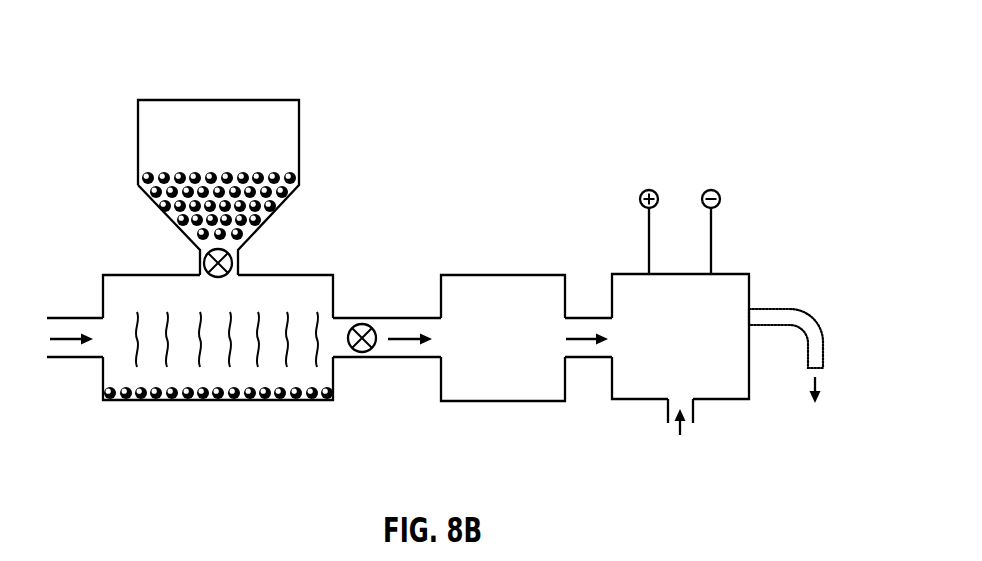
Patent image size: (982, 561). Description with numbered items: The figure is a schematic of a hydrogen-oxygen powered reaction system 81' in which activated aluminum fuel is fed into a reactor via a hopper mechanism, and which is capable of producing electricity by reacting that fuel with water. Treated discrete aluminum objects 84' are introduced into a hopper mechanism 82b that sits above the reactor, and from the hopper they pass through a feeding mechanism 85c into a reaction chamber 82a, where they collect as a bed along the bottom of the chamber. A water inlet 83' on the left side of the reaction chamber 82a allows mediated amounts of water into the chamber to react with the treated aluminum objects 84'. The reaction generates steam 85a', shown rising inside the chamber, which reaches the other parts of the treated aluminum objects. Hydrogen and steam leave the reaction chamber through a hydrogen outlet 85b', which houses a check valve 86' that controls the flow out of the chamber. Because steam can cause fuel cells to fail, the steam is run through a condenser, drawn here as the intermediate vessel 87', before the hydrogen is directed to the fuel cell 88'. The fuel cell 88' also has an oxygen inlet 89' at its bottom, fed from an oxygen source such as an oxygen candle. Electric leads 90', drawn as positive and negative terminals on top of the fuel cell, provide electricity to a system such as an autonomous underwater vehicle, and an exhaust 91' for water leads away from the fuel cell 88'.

The reaction system 81' is at (527, 82).
The reaction chamber 82a is at (112, 275).
The hopper mechanism 82b is at (217, 100).
The water inlet 83' is at (71, 303).
The treated discrete aluminum objects 84' is at (218, 427).
The steam 85a' is at (234, 295).
The hydrogen outlet 85b' is at (387, 373).
The feeding mechanism 85c is at (200, 260).
The check valve 86' is at (374, 302).
The second treatment chamber 87' is at (526, 372).
The fuel cell 88' is at (693, 303).
The oxygen inlet 89' is at (717, 424).
The electric leads 90' is at (680, 205).
The exhaust 91' is at (816, 344).